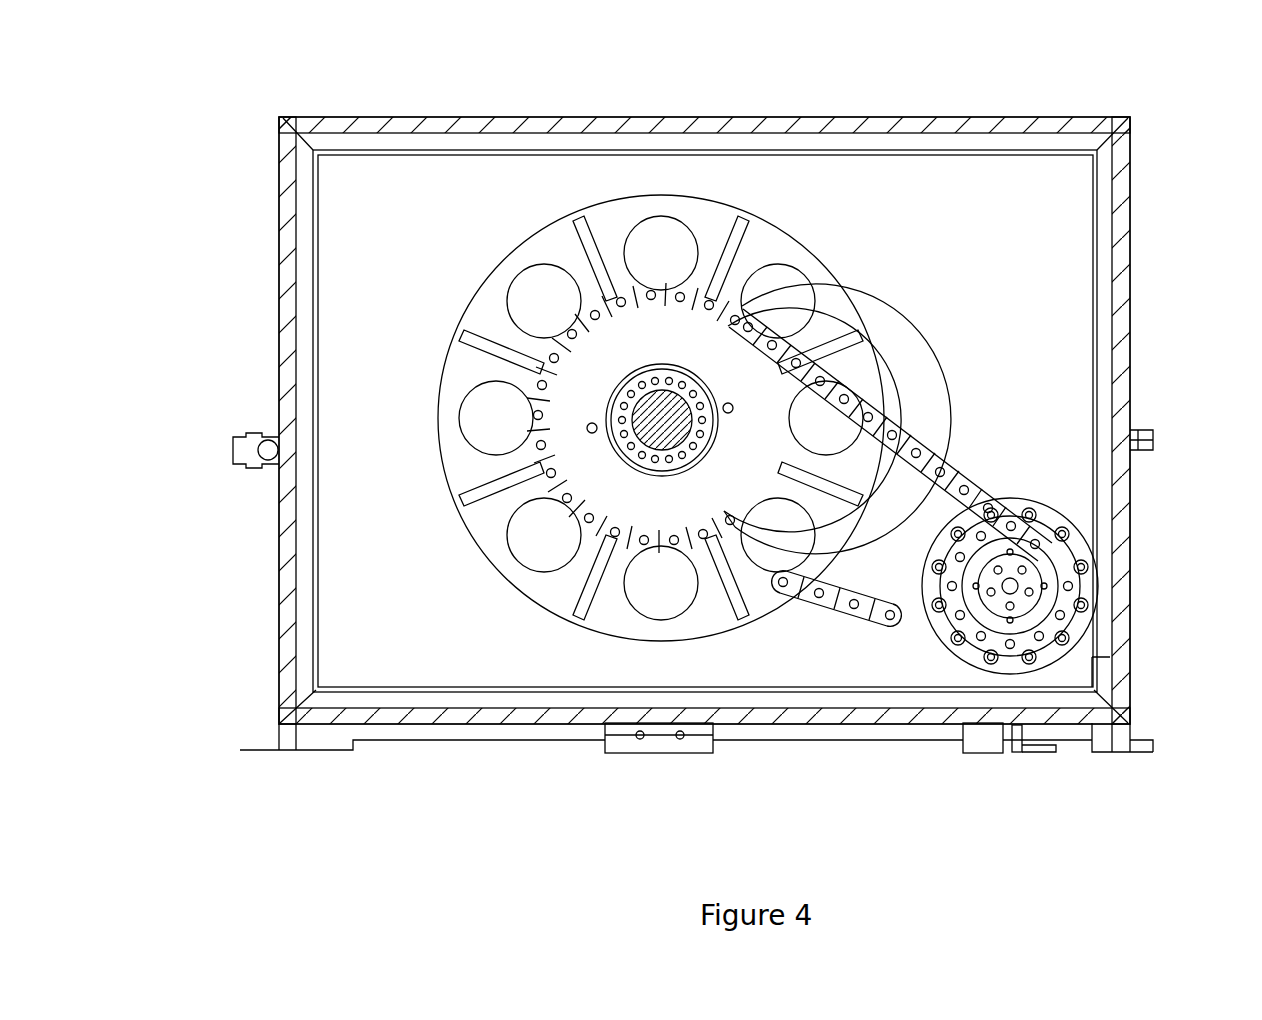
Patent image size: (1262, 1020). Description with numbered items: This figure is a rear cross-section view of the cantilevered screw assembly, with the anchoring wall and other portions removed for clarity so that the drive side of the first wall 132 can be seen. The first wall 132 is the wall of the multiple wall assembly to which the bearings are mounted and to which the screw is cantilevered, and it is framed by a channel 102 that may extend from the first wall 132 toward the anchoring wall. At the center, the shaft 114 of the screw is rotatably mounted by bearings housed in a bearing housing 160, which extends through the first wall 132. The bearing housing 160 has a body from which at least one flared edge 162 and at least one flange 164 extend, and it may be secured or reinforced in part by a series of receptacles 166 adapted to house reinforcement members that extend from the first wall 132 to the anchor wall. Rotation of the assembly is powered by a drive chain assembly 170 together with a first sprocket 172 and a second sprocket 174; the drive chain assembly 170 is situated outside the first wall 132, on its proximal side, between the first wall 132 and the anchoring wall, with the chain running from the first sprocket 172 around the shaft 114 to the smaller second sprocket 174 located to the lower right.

The channel 102 is at (1003, 117).
The shaft 114 is at (630, 440).
The first wall 132 is at (1047, 277).
The bearing housing 160 is at (678, 383).
The flared edge 162 is at (535, 230).
The flange 164 is at (577, 610).
The receptacles 166 is at (505, 288).
The drive chain assembly 170 is at (935, 470).
The first sprocket 172 is at (735, 527).
The second sprocket 174 is at (1028, 569).